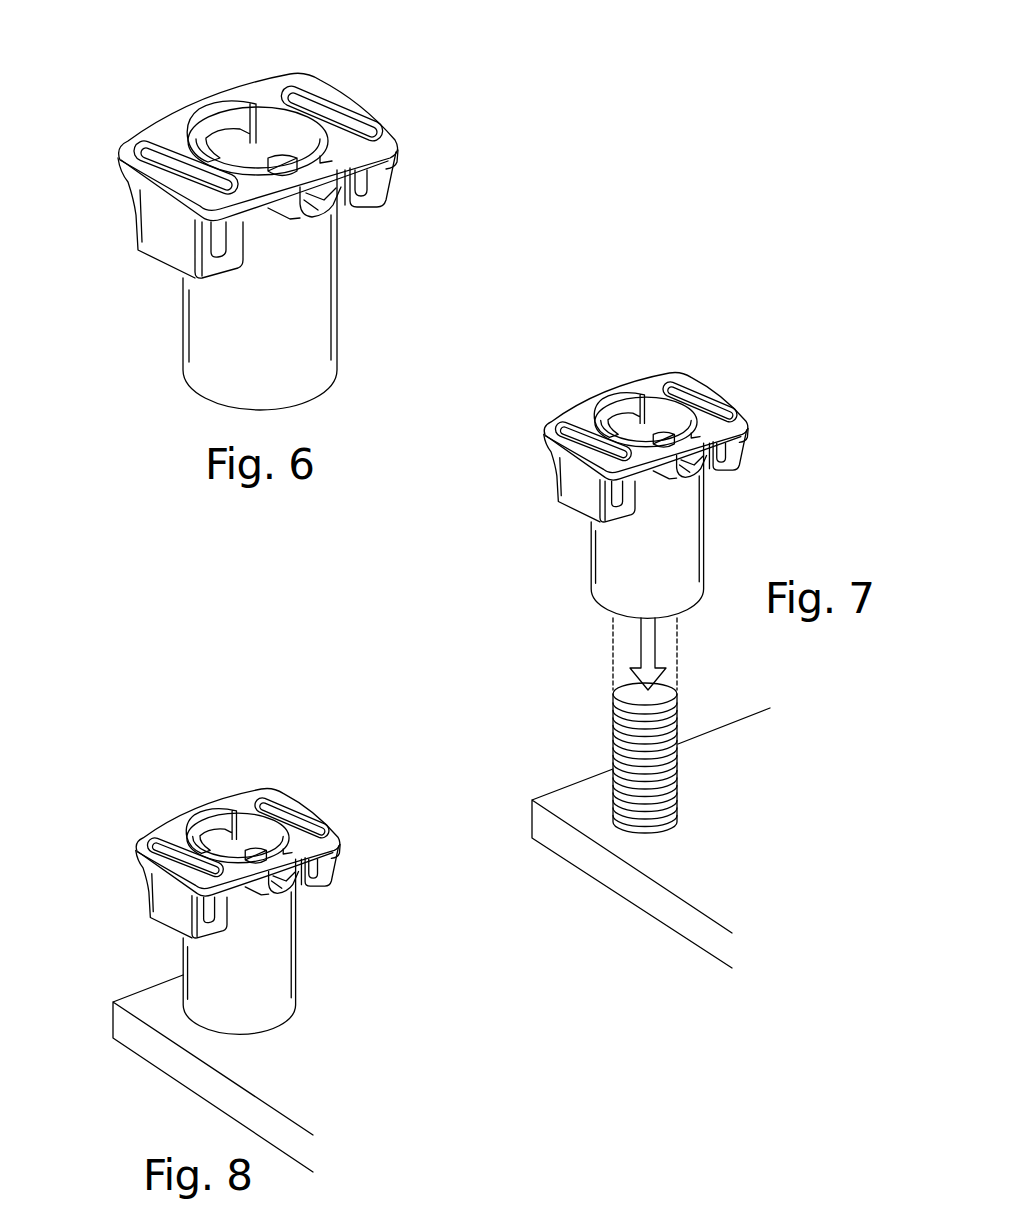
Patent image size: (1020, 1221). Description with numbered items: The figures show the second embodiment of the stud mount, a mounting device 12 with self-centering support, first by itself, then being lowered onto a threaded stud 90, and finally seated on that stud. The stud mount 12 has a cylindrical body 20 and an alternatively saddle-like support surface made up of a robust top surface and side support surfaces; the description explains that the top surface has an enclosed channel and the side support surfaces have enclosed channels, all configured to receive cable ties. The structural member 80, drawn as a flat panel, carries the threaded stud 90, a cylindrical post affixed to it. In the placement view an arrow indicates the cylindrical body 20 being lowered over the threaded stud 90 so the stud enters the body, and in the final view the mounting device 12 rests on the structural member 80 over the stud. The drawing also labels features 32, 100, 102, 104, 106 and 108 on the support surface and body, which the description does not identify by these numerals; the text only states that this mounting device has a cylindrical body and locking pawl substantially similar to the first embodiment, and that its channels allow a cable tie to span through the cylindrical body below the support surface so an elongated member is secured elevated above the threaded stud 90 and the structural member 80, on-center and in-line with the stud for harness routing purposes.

In FIG. 6, the fastener clip assembly 12 is at (325, 48).
In FIG. 7, the fastener clip assembly 12 is at (705, 350).
In FIG. 8, the fastener clip assembly 12 is at (297, 770).
In FIG. 6, the cylindrical body 20 is at (338, 303).
In FIG. 7, the cylindrical body 20 is at (709, 538).
In FIG. 8, the cylindrical body 20 is at (301, 957).
In FIG. 6, the central opening 32 is at (165, 122).
In FIG. 7, the central opening 32 is at (583, 414).
In FIG. 8, the central opening 32 is at (178, 835).
In FIG. 7, the structural member 80 is at (563, 800).
In FIG. 8, the structural member 80 is at (165, 1022).
In FIG. 7, the threaded stud 90 is at (613, 728).
In FIG. 6, the top plate 100 is at (255, 92).
In FIG. 7, the top plate 100 is at (643, 388).
In FIG. 8, the top plate 100 is at (235, 807).
In FIG. 6, the retaining tab 102 is at (212, 131).
In FIG. 7, the retaining tab 102 is at (610, 417).
In FIG. 8, the retaining tab 102 is at (203, 833).
In FIG. 6, the slot 104 is at (150, 146).
In FIG. 7, the slot 104 is at (567, 422).
In FIG. 8, the slot 104 is at (157, 838).
In FIG. 6, the locking leg 106 is at (371, 182).
In FIG. 7, the locking leg 106 is at (731, 453).
In FIG. 8, the locking leg 106 is at (318, 872).
In FIG. 6, the side wall 108 is at (152, 218).
In FIG. 7, the side wall 108 is at (565, 475).
In FIG. 8, the side wall 108 is at (160, 893).